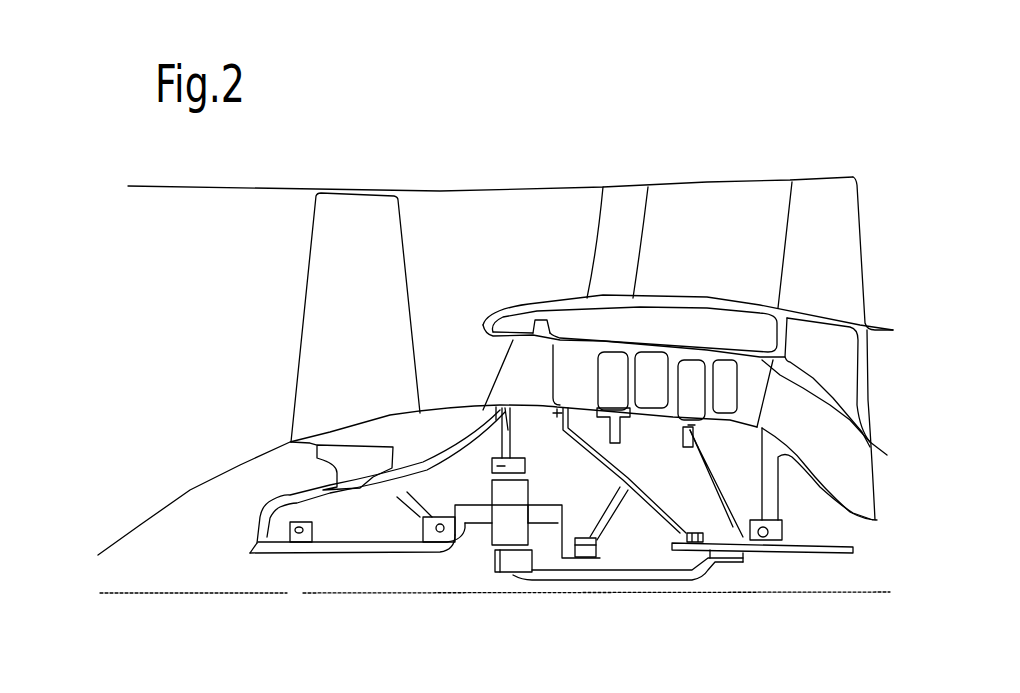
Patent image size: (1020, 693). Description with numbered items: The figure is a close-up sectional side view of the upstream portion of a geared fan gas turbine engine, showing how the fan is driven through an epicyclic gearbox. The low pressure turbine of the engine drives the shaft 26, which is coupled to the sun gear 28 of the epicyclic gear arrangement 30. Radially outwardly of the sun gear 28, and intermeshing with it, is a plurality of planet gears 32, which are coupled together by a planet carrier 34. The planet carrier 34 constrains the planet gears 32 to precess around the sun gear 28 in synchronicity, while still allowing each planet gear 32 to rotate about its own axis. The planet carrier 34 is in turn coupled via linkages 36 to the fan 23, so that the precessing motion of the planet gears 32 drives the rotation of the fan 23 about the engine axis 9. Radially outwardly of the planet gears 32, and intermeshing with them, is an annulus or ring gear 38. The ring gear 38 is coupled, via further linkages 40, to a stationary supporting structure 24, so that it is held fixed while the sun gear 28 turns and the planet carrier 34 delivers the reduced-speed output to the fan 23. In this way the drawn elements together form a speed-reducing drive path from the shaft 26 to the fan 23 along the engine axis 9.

The engine axis 9 is at (263, 593).
The fan 23 is at (318, 357).
The stationary supporting structure 24 is at (522, 372).
The shaft 26 is at (747, 553).
The sun gear 28 is at (508, 565).
The epicyclic gear arrangement 30 is at (465, 548).
The planet gears 32 is at (488, 530).
The planet carrier 34 is at (562, 527).
The linkages 36 is at (443, 555).
The ring gear 38 is at (492, 467).
The linkages 40 is at (518, 430).